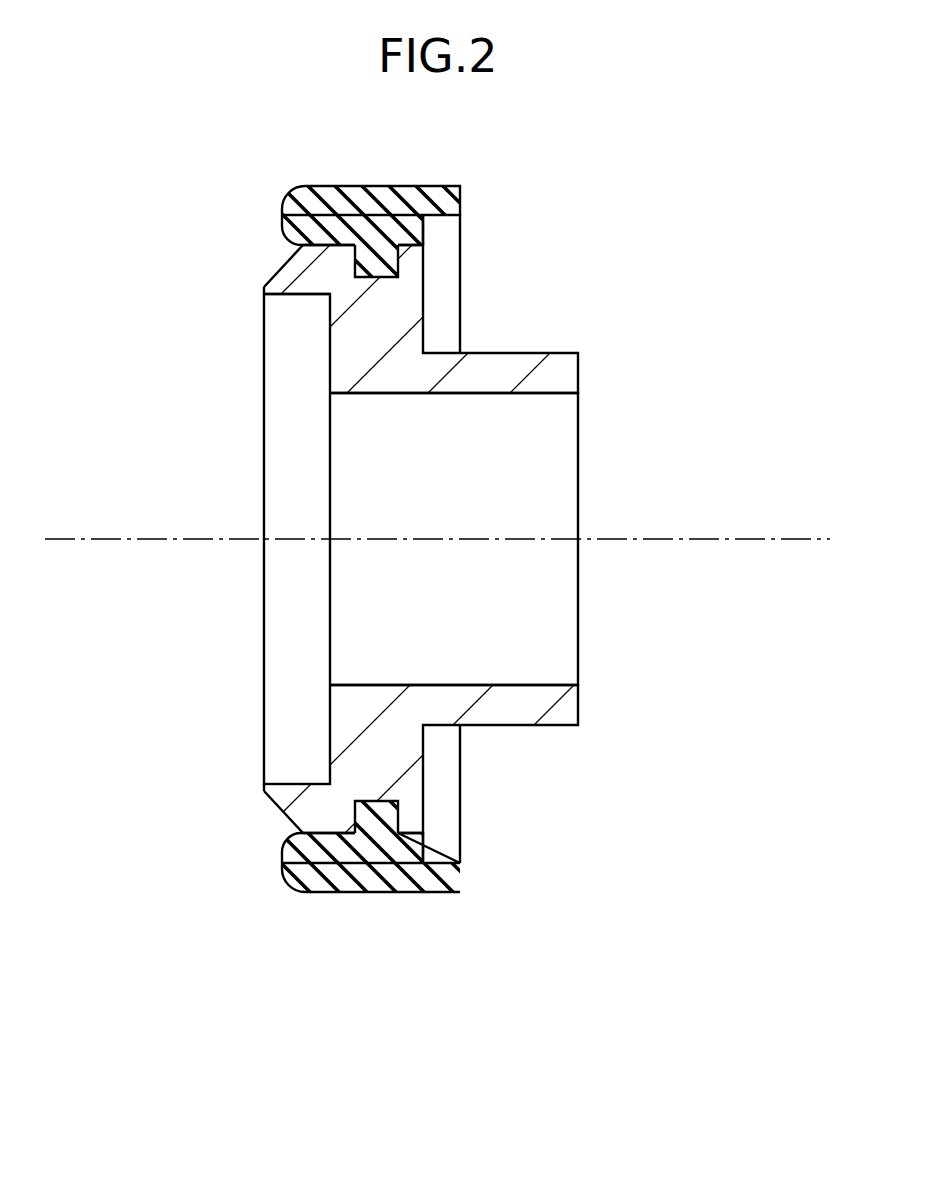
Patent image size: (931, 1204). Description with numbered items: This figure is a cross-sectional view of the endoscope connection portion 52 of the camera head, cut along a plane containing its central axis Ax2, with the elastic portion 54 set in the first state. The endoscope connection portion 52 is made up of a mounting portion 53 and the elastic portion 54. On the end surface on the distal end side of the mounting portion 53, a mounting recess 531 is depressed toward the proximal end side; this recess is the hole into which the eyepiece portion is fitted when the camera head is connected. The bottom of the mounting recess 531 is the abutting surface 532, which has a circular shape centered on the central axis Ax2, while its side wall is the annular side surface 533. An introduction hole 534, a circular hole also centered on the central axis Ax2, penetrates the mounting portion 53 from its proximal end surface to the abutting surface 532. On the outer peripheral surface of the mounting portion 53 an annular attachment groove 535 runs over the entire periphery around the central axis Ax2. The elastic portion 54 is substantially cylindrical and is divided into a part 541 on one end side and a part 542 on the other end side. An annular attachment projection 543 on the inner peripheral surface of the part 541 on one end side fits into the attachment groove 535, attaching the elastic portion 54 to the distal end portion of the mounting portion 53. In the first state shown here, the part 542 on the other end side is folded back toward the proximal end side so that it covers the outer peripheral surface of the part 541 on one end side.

The endoscope connection portion 52 is at (465, 602).
The mounting portion 53 is at (465, 602).
The elastic portion 54 is at (465, 602).
The mounting recess 531 is at (192, 539).
The abutting surface 532 is at (330, 362).
The side surface 533 is at (298, 296).
The introduction hole 534 is at (528, 393).
The attachment groove 535 is at (354, 803).
The part on one end side 541 is at (333, 226).
The part on the other end side 542 is at (393, 193).
The attachment projection 543 is at (383, 267).
The central axis Ax2 is at (782, 537).